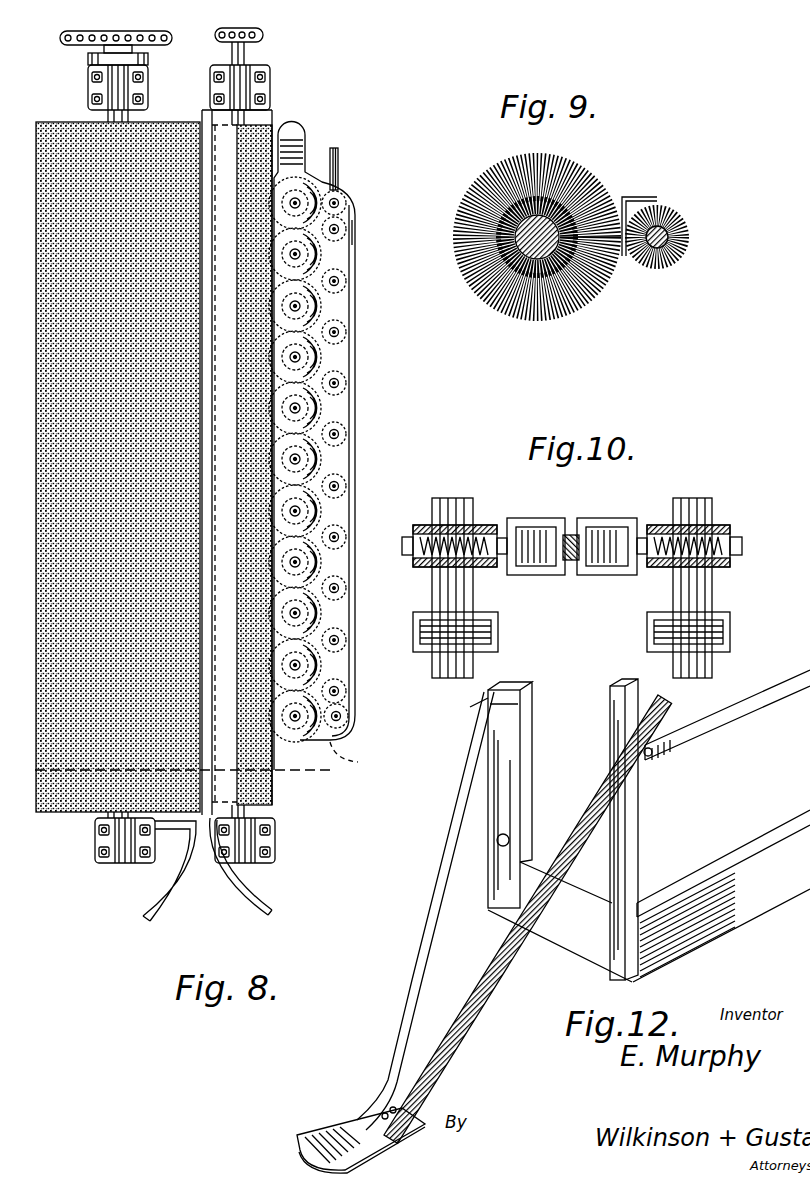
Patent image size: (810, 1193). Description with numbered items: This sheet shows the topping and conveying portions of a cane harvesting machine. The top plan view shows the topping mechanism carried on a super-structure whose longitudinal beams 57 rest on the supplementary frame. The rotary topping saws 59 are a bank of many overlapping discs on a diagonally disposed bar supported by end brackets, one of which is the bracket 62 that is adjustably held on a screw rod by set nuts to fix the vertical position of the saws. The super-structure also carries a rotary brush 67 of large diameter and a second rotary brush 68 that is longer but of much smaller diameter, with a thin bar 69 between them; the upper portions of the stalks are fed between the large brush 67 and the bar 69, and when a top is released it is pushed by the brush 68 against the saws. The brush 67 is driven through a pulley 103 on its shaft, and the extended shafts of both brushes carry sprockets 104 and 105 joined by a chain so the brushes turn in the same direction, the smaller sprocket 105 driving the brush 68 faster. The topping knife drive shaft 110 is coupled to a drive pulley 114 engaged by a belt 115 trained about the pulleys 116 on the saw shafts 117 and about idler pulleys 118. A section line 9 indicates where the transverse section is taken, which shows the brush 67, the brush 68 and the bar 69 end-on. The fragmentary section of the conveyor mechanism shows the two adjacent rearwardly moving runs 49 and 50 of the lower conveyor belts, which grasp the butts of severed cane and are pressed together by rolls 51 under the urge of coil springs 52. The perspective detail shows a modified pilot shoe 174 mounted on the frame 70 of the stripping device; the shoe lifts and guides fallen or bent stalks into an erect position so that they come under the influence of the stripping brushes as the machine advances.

In FIG. 8, the longitudinal beams 57 is at (58, 123).
In FIG. 9, the rotary brush 67 is at (593, 297).
In FIG. 8, the second rotary brush 68 is at (275, 125).
In FIG. 9, the second rotary brush 68 is at (690, 234).
In FIG. 8, the thin bar 69 is at (207, 111).
In FIG. 9, the thin bar 69 is at (640, 197).
In FIG. 8, the pulley 103 is at (145, 60).
In FIG. 8, the sprocket 104 is at (80, 24).
In FIG. 8, the sprocket 105 is at (248, 30).
In FIG. 8, the rotary topping saws 59 is at (322, 357).
In FIG. 8, the end bracket 62 is at (300, 139).
In FIG. 8, the shaft 110 is at (340, 152).
In FIG. 8, the drive pulley 114 is at (346, 194).
In FIG. 8, the belt 115 is at (354, 232).
In FIG. 8, the saw shafts 117 is at (290, 203).
In FIG. 8, the idler pulleys 118 is at (342, 279).
In FIG. 8, the pulleys 116 is at (362, 758).
In FIG. 8, the section line 9 is at (179, 772).
In FIG. 10, the coil springs 52 is at (418, 530).
In FIG. 10, the rolls 51 is at (568, 532).
In FIG. 10, the run of lower conveyor belt 50 is at (572, 563).
In FIG. 10, the run of lower conveyor belt 49 is at (573, 563).
In FIG. 12, the frame 70 is at (649, 826).
In FIG. 12, the pilot shoe 174 is at (341, 1122).